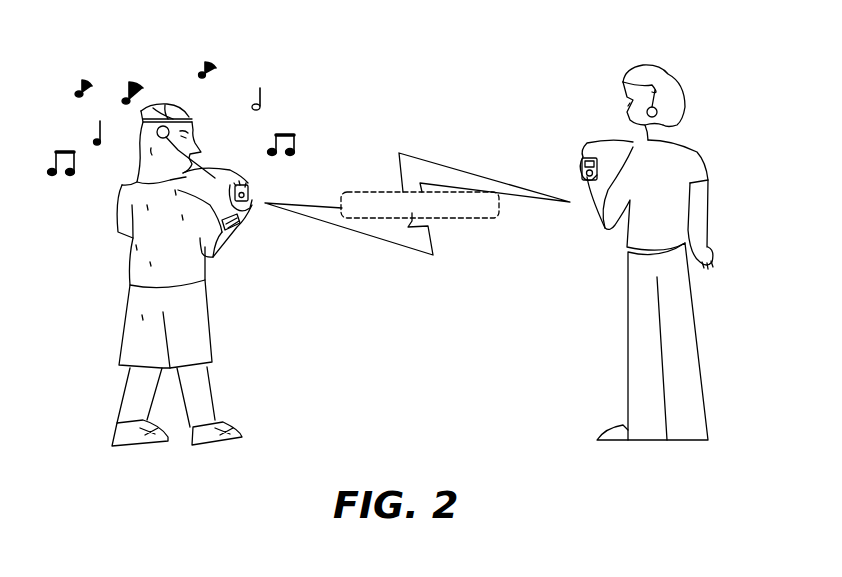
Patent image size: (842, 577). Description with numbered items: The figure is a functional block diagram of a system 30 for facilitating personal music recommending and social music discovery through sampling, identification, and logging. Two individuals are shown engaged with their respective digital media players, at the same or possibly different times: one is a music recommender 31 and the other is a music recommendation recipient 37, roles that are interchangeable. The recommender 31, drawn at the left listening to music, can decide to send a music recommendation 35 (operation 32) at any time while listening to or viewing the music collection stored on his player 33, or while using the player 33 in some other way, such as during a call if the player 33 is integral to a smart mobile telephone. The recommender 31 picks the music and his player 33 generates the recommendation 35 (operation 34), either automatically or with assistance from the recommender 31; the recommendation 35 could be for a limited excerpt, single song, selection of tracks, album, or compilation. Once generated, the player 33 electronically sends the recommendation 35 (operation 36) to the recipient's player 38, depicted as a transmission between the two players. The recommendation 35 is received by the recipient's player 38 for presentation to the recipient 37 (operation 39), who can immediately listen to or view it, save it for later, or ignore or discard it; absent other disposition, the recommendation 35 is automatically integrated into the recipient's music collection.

The system for facilitating personal music recommending and social music discovery 30 is at (127, 49).
The music recommender 31 is at (116, 223).
The operation of deciding to send a music recommendation 32 is at (250, 73).
The digital media player 33 is at (248, 203).
The operation of generating the recommendation 34 is at (249, 253).
The music recommendation 35 is at (377, 191).
The operation of electronically sending the recommendation 36 is at (366, 235).
The music recommendation recipient 37 is at (708, 182).
The recipient's digital media player 38 is at (582, 160).
The operation of receiving the recommendation for presentation 39 is at (585, 105).